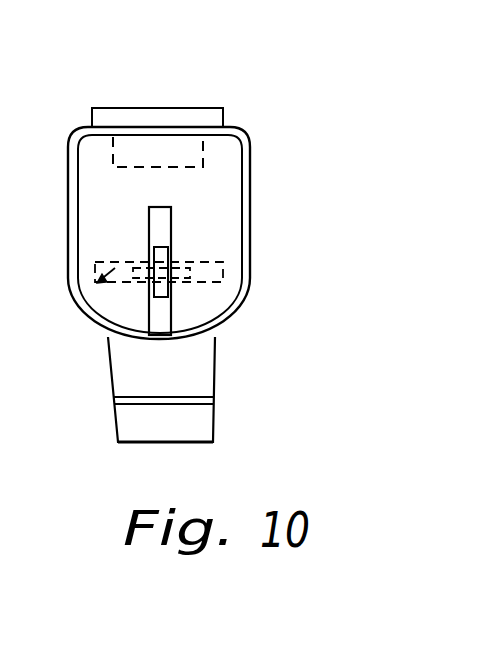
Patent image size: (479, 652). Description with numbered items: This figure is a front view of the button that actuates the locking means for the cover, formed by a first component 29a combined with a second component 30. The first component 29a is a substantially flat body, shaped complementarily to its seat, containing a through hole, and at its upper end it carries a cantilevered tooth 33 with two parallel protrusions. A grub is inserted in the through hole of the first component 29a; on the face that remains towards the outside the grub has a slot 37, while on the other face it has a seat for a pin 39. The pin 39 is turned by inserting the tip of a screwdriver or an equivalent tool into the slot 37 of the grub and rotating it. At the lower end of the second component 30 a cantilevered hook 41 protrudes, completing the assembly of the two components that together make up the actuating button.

The first component 29a is at (217, 175).
The cantilevered tooth 33 is at (170, 147).
The slot 37 is at (160, 258).
The pin 39 is at (92, 289).
The second component 30 is at (219, 371).
The cantilevered hook 41 is at (157, 422).